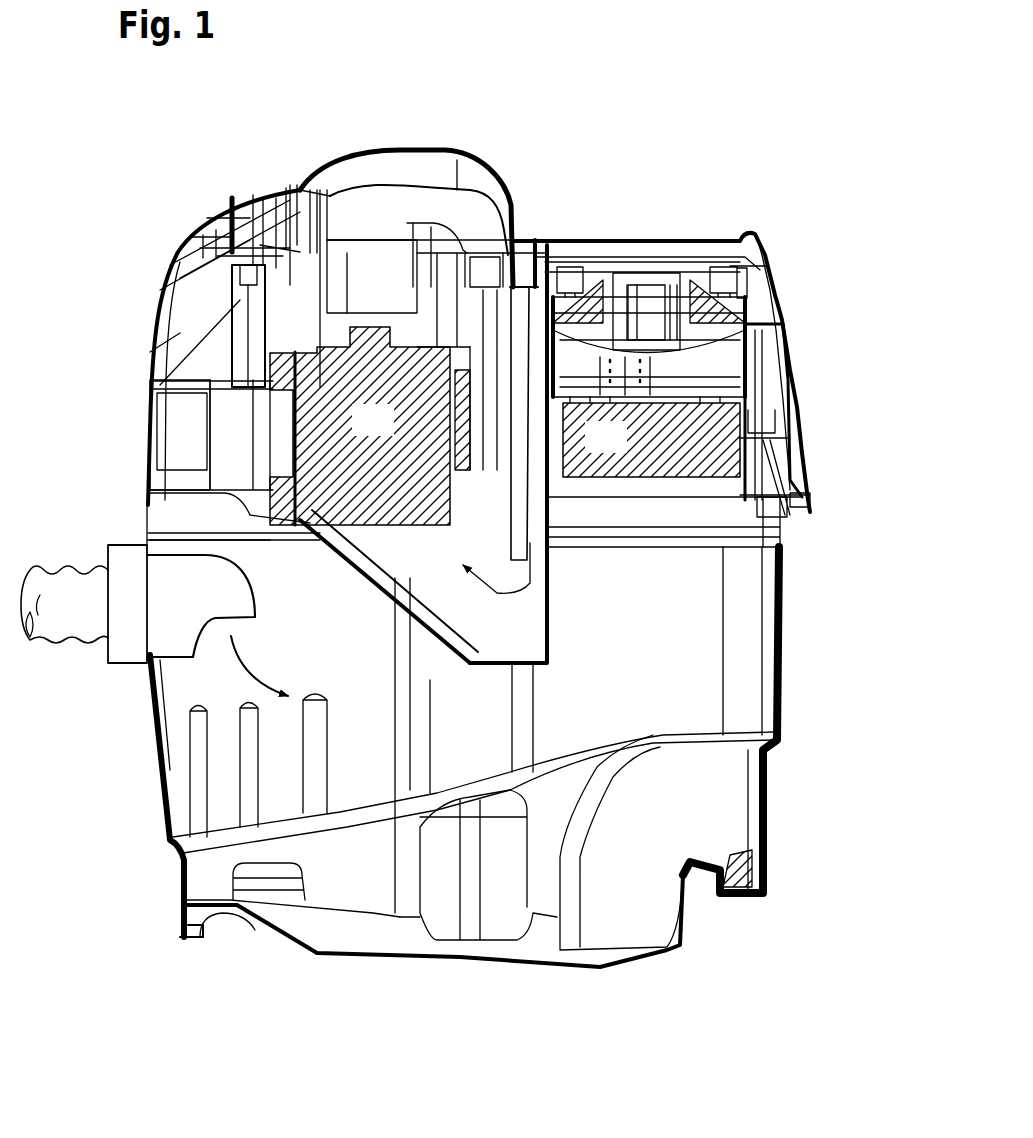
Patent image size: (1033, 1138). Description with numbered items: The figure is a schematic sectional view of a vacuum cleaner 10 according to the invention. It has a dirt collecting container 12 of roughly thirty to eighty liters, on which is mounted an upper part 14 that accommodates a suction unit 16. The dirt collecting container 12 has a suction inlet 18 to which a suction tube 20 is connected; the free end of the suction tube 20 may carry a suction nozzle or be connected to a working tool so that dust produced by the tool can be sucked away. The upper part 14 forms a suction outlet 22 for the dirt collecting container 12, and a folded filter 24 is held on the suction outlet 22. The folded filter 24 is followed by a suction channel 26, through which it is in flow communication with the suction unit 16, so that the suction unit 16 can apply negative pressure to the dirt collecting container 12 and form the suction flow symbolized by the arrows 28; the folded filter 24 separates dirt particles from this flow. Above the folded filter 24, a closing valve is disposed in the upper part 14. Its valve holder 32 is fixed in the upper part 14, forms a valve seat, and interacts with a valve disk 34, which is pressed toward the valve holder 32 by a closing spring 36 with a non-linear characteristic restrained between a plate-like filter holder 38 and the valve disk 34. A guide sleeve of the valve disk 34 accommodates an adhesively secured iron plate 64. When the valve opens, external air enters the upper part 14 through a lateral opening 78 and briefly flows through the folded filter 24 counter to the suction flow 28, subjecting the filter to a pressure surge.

The vacuum cleaner 10 is at (585, 176).
The dirt collecting container 12 is at (157, 769).
The upper part 14 is at (150, 340).
The suction unit 16 is at (388, 434).
The suction inlet 18 is at (140, 643).
The suction tube 20 is at (58, 630).
The suction outlet 22 is at (745, 428).
The folded filter 24 is at (647, 520).
The suction channel 26 is at (527, 420).
The arrows 28 is at (505, 712).
The valve holder 32 is at (744, 296).
The valve disk 34 is at (737, 367).
The closing spring 36 is at (737, 377).
The filter holder 38 is at (740, 437).
The iron plate 64 is at (648, 330).
The lateral opening 78 is at (783, 296).